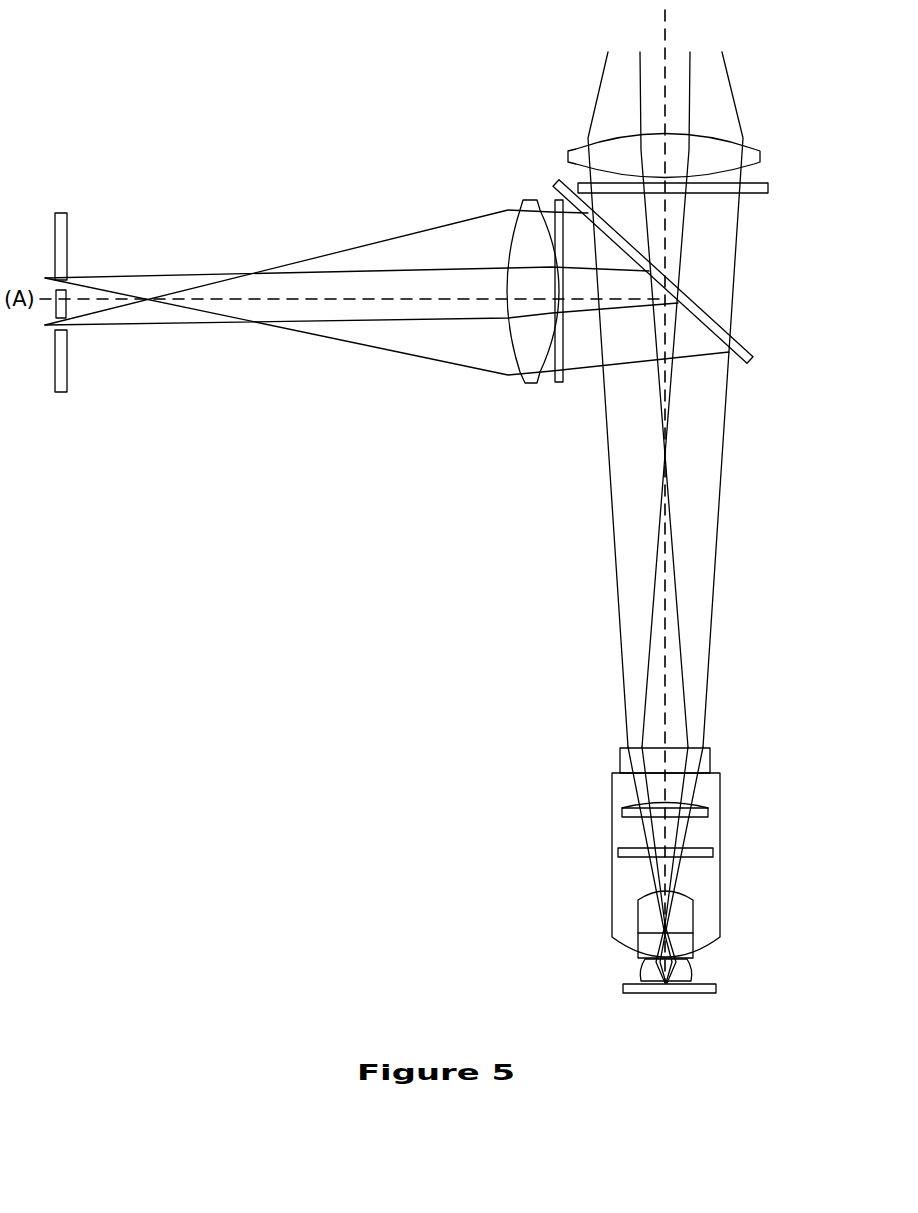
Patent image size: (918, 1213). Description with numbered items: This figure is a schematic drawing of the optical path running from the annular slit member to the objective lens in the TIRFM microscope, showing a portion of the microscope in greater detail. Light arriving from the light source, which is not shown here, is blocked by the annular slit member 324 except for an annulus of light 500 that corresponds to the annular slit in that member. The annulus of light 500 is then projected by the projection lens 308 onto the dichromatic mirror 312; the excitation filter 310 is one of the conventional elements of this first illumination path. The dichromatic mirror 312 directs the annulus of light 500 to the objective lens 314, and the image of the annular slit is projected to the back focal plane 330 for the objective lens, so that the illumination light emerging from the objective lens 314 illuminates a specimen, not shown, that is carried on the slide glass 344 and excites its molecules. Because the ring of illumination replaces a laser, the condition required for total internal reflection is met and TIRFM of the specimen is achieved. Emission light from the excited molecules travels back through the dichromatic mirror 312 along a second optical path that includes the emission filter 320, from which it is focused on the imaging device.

The projection lens 308 is at (533, 200).
The excitation filter 310 is at (559, 383).
The dichromatic mirror 312 is at (765, 349).
The objective lens 314 is at (618, 793).
The emission filter 320 is at (769, 187).
The annular slit member 324 is at (61, 393).
The back focal plane 330 is at (742, 836).
The slide glass 344 is at (716, 989).
The annulus of light 500 is at (136, 276).